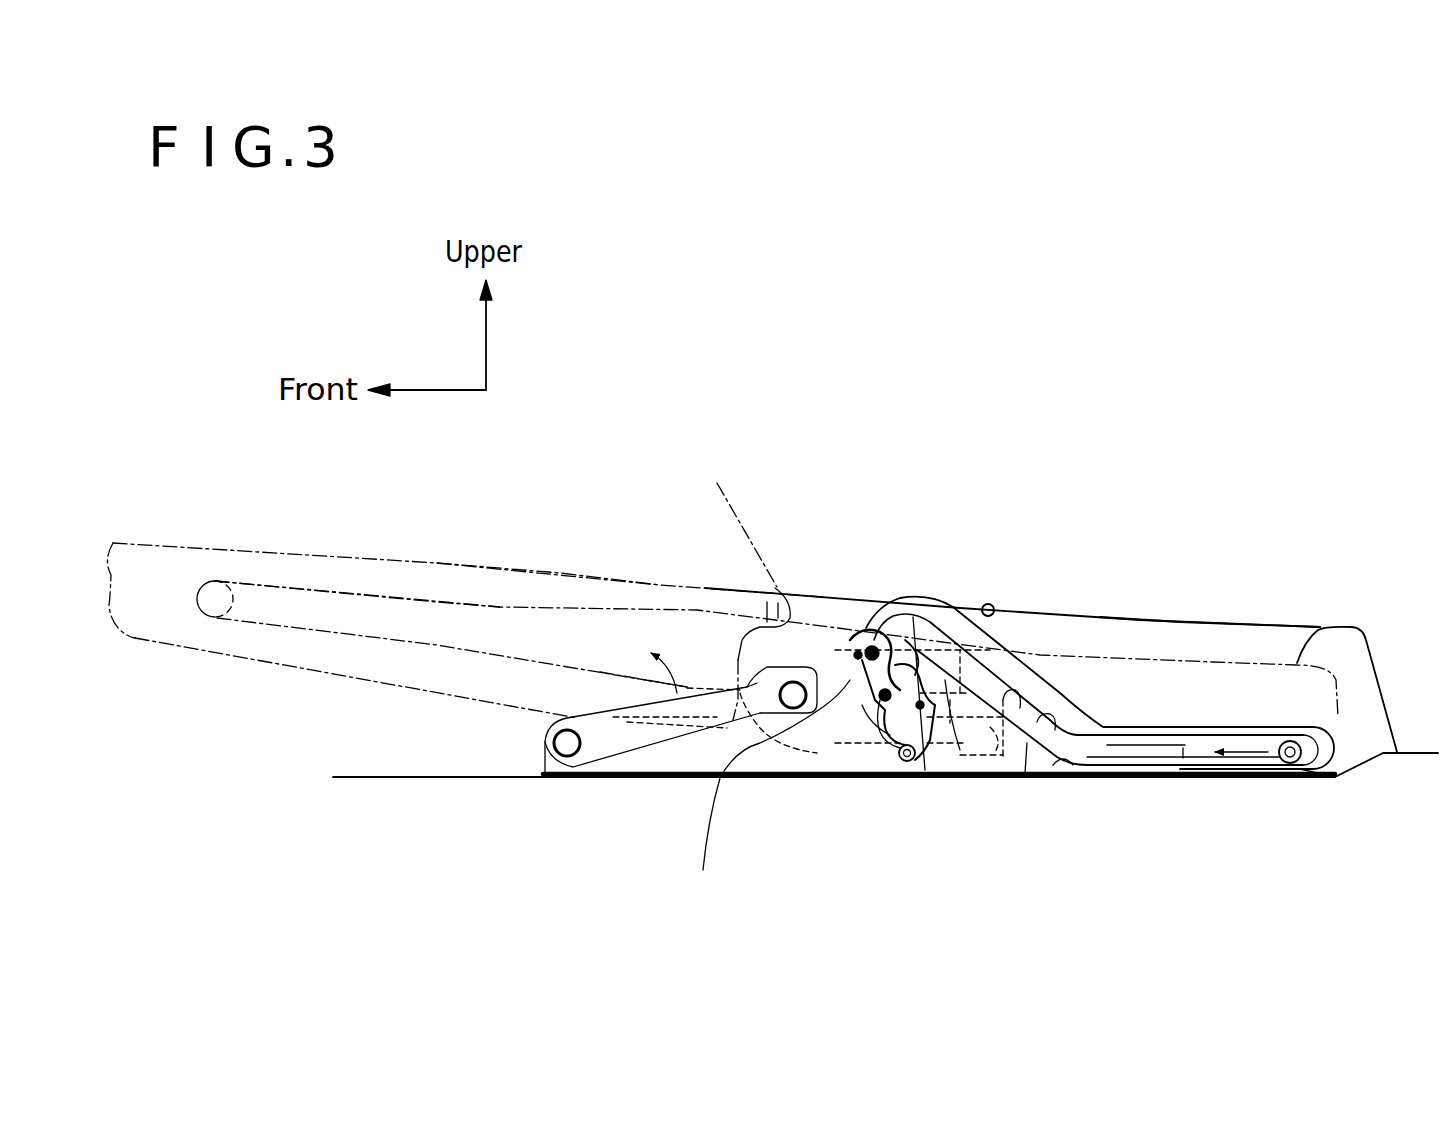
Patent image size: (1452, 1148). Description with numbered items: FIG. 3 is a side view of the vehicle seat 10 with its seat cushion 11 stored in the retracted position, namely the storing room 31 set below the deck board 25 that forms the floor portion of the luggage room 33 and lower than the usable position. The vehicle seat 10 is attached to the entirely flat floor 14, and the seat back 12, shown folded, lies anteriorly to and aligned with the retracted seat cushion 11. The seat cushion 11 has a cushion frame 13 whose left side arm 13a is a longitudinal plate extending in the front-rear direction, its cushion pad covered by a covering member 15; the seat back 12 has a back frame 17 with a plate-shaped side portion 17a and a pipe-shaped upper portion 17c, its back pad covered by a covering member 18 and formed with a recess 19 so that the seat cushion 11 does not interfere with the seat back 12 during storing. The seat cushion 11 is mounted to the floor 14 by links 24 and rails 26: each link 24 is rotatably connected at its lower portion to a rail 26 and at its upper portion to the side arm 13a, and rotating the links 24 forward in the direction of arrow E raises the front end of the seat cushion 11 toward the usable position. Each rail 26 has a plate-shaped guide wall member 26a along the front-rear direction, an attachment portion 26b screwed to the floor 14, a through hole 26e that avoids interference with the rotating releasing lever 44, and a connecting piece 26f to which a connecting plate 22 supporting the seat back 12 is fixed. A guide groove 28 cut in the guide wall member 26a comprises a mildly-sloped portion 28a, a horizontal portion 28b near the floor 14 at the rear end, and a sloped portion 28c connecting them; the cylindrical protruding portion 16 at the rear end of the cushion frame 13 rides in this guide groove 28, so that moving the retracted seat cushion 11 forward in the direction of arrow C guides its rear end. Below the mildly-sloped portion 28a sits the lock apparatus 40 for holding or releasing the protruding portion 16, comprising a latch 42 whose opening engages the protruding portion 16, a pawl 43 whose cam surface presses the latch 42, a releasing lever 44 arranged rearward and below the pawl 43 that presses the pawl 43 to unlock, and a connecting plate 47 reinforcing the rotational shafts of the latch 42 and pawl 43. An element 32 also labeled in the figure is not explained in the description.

The vehicle seat 10 is at (790, 526).
The seat cushion 11 is at (1182, 652).
The seat back 12 is at (428, 560).
The cushion frame 13 is at (819, 666).
The left side arm 13a is at (1185, 776).
The floor 14 is at (361, 776).
The covering member 15 is at (1324, 622).
The protruding portion 16 is at (1297, 777).
The back frame 17 is at (306, 589).
The side portion 17a is at (630, 620).
The pipe shaped upper portion 17c is at (198, 592).
The covering member 18 is at (557, 571).
The recess 19 is at (743, 581).
The connecting plate 22 is at (965, 770).
The link 24 is at (626, 776).
The deck board 25 is at (1228, 619).
The rail 26 is at (1025, 773).
The guide wall member 26a is at (1157, 733).
The attachment portion 26b is at (1078, 772).
The through hole 26e is at (880, 700).
The connecting piece 26f is at (872, 768).
The guide groove 28 is at (1060, 717).
The mildly-sloped portion 28a is at (913, 617).
The horizontal portion 28b is at (1213, 735).
The sloped portion 28c is at (1040, 674).
The storing room 31 is at (1138, 616).
The pin 32 is at (990, 604).
The luggage room 33 is at (1130, 484).
The lock apparatus 40 is at (830, 740).
The latch 42 is at (855, 640).
The pawl 43 is at (920, 668).
The releasing lever 44 is at (924, 777).
The connecting plate 47 is at (769, 796).
The arrow C is at (1250, 776).
The arrow E is at (666, 658).